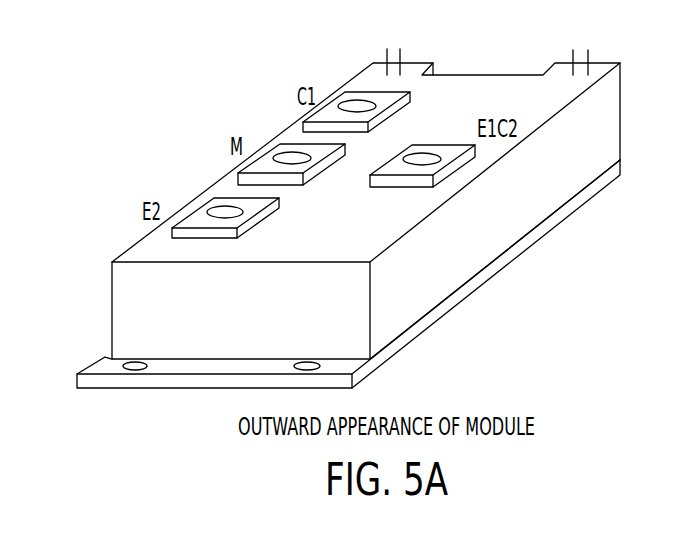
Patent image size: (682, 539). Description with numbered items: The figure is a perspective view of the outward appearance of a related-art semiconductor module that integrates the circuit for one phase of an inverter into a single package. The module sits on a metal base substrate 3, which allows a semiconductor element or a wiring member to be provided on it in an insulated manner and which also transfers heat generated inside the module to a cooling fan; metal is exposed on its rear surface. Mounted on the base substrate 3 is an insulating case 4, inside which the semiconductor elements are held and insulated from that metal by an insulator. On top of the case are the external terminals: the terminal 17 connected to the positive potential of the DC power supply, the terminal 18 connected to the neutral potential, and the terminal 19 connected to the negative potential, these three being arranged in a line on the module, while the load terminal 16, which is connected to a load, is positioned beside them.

The base substrate 3 is at (128, 390).
The insulating case 4 is at (605, 135).
The E1C2 terminal 16 is at (443, 153).
The C1 terminal 17 is at (360, 96).
The M terminal 18 is at (296, 148).
The E2 terminal 19 is at (229, 204).